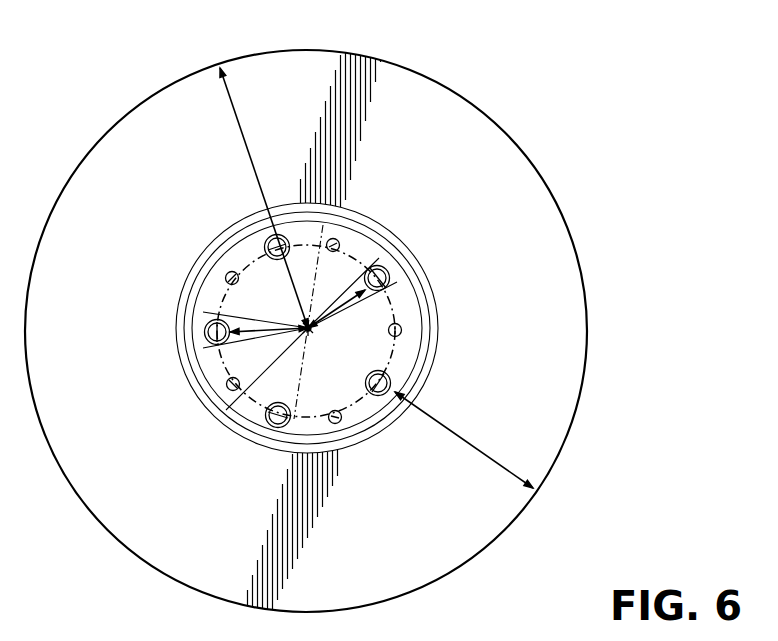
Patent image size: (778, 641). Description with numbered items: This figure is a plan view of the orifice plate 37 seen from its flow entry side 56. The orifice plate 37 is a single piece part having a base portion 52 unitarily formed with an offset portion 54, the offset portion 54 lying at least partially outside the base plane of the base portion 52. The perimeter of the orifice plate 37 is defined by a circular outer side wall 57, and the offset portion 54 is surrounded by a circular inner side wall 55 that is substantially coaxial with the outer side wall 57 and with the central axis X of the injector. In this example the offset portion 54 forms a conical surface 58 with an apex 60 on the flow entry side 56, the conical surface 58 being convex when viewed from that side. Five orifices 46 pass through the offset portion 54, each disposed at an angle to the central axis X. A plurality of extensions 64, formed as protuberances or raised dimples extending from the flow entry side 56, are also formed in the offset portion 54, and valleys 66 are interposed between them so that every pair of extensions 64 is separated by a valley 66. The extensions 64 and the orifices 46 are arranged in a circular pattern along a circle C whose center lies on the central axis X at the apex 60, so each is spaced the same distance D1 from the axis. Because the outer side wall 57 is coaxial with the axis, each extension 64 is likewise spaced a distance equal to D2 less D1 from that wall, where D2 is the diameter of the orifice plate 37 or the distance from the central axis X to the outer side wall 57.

The orifice plate 37 is at (555, 182).
The orifices 46 is at (227, 275).
The base portion 52 is at (557, 394).
The offset portion 54 is at (398, 295).
The inner side wall 55 is at (381, 418).
The flow entry side 56 is at (224, 367).
The outer side wall 57 is at (549, 474).
The conical surface 58 is at (306, 338).
The apex 60 is at (220, 351).
The extensions 64 is at (281, 237).
The valleys 66 is at (253, 258).
The distance D1 is at (262, 323).
The distance D2 is at (237, 113).
The central axis X is at (308, 328).
The circle C is at (294, 419).